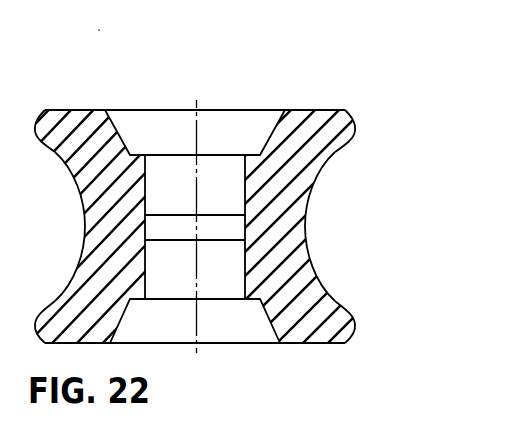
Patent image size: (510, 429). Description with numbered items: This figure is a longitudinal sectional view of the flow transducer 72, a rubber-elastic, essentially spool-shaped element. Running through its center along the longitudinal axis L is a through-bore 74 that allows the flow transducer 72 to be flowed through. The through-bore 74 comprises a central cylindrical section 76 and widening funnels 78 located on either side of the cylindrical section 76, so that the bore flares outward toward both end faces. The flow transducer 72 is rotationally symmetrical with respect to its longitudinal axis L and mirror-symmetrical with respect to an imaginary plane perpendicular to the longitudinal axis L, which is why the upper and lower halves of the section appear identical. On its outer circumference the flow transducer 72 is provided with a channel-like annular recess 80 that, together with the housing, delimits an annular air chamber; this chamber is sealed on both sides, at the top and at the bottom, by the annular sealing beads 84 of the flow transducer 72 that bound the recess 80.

The flow transducer 72 is at (122, 106).
The through-bore 74 is at (239, 344).
The central cylindrical section 76 is at (184, 196).
The widening funnels 78 is at (168, 144).
The channel-like annular recess 80 is at (310, 217).
The annular sealing beads 84 is at (353, 127).
The longitudinal axis L is at (197, 325).